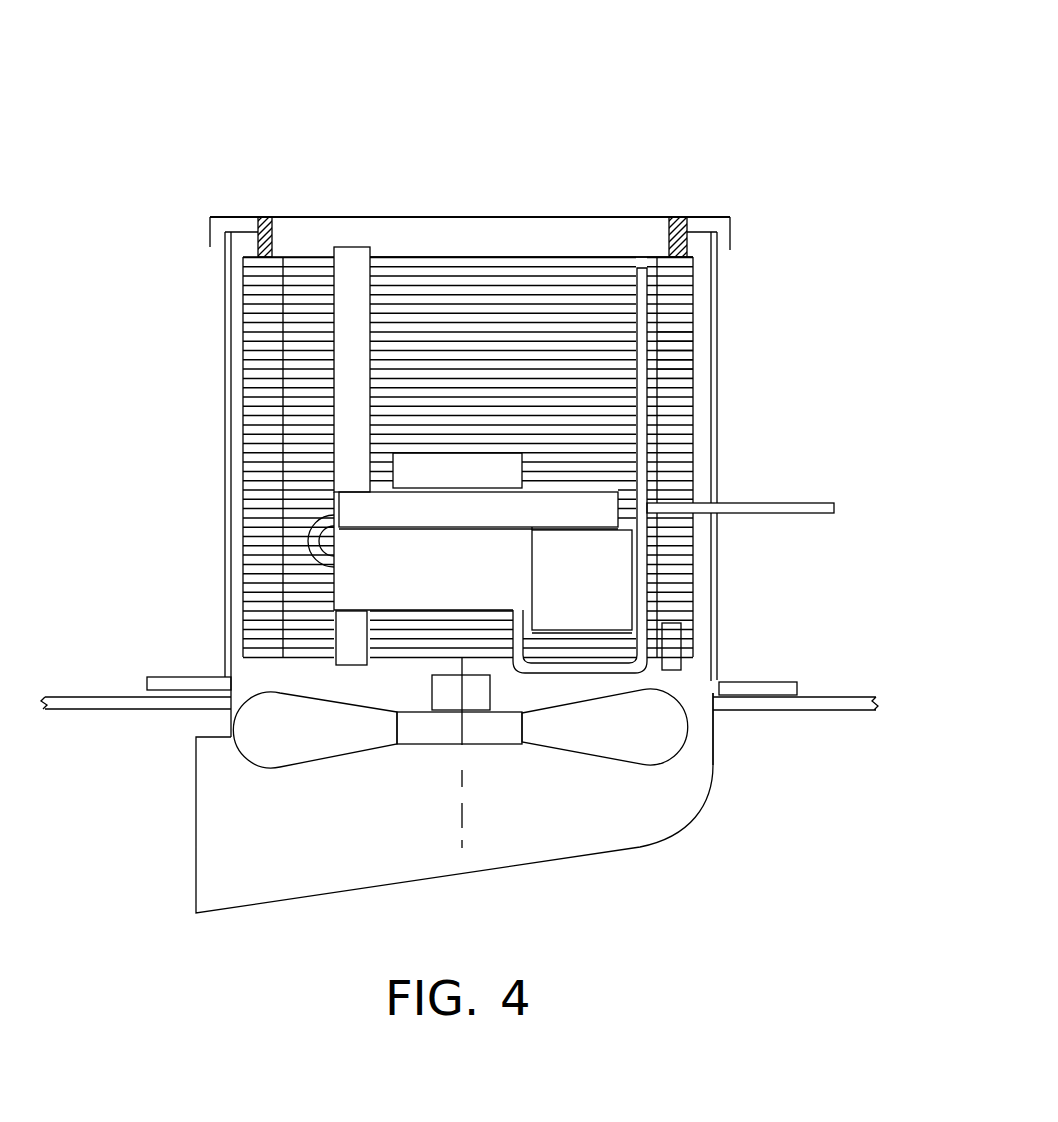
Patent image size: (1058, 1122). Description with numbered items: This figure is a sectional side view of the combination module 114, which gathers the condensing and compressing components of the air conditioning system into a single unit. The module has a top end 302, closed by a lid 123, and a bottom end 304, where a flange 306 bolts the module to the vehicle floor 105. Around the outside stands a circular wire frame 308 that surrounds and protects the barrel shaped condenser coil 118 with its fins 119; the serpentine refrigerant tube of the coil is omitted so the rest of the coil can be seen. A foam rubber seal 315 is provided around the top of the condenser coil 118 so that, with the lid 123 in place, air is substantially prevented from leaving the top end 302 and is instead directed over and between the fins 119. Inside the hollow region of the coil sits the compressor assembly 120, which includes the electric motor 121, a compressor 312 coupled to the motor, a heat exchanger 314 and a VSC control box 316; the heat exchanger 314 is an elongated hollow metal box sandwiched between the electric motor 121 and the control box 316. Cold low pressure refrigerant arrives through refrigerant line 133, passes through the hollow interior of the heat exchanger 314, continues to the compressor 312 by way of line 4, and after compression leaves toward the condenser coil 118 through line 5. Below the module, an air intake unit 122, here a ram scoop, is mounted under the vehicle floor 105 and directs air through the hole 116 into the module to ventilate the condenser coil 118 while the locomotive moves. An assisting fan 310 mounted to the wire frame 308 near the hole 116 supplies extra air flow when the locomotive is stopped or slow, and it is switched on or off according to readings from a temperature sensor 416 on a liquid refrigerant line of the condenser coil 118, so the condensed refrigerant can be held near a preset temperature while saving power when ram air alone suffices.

The combination module 114 is at (625, 148).
The foam rubber seal 315 is at (290, 230).
The VSC control box 316 is at (345, 247).
The condenser coil 118 is at (435, 257).
The lid 123 is at (540, 217).
The top end 302 is at (604, 248).
The fins 119 is at (692, 330).
The wire frame 308 is at (717, 410).
The refrigerant line 133 is at (803, 516).
The heat exchanger 314 is at (478, 510).
The compressor 312 is at (433, 551).
The electric motor 121 is at (582, 581).
The refrigerant line 4 is at (332, 567).
The temperature sensor 416 is at (688, 627).
The compressor assembly 120 is at (343, 598).
The refrigerant line 5 is at (595, 665).
The flange 306 is at (780, 680).
The bottom end 304 is at (689, 674).
The hole 116 is at (697, 727).
The assisting fan 310 is at (563, 733).
The vehicle floor 105 is at (862, 712).
The air intake unit 122 is at (537, 863).